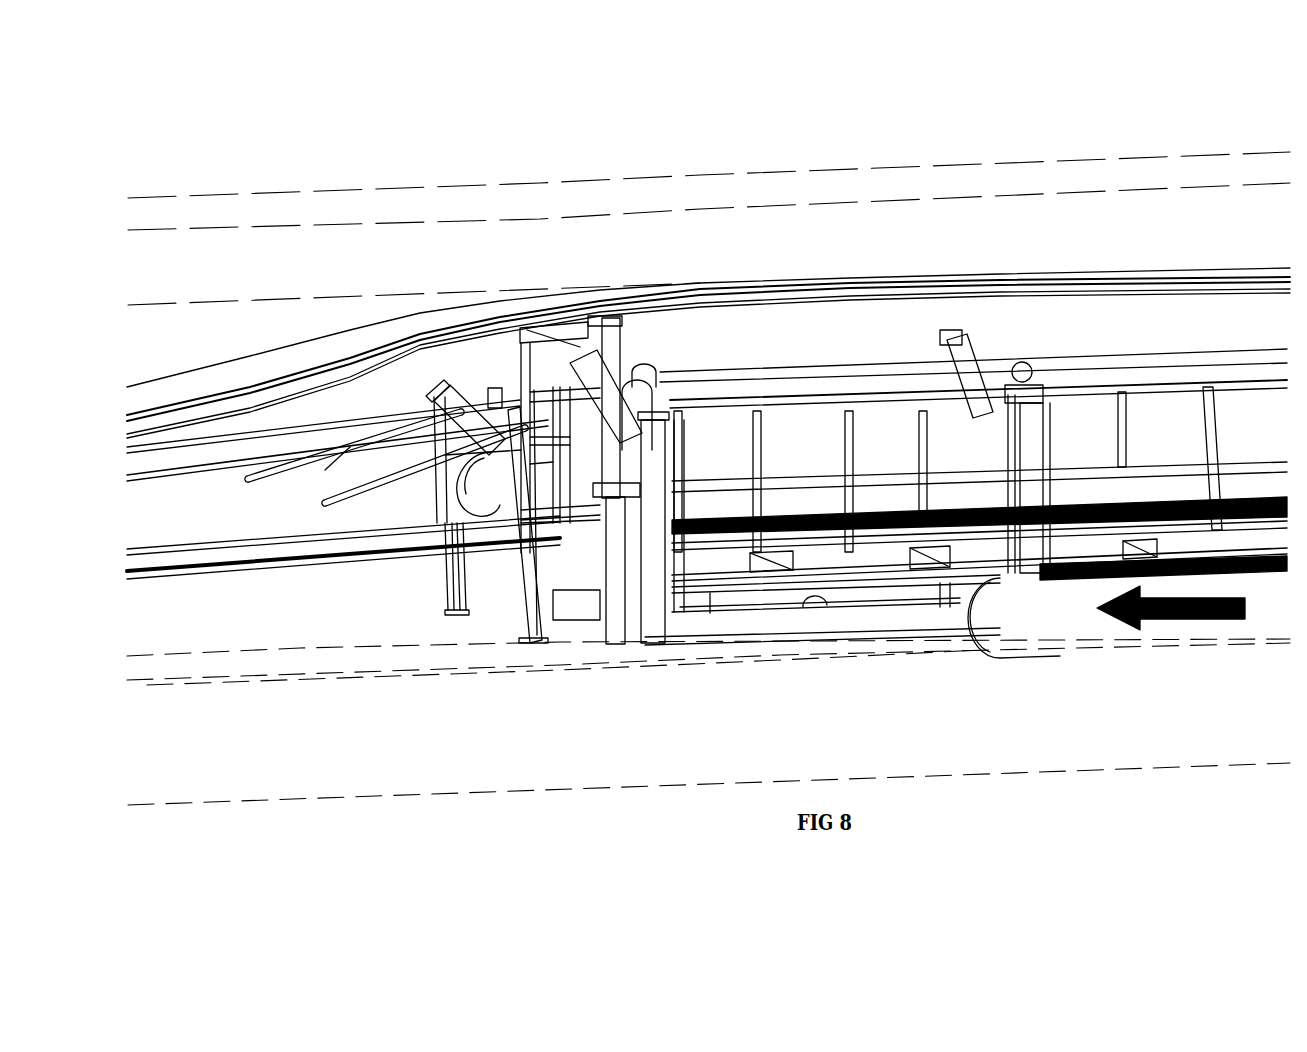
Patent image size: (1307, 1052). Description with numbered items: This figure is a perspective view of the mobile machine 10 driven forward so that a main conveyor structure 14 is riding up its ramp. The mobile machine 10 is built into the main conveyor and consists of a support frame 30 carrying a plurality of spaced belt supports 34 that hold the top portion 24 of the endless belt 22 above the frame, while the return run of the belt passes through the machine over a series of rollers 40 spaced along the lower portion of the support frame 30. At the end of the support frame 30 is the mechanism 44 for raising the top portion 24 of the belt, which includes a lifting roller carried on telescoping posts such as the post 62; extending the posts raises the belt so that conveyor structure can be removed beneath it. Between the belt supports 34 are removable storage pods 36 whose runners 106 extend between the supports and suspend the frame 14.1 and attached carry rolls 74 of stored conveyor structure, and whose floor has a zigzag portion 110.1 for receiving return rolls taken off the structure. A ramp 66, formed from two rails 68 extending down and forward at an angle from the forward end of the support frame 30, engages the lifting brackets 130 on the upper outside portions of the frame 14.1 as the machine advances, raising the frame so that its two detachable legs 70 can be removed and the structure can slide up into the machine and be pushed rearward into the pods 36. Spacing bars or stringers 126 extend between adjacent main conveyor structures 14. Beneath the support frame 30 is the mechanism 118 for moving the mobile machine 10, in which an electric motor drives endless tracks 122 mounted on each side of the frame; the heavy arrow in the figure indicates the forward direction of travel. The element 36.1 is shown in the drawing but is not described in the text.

The mobile machine 10 is at (863, 177).
The endless belt 22 is at (718, 277).
The top portion of the endless belt 24 is at (1163, 284).
The ramp 66 is at (343, 400).
The rails 68 is at (400, 463).
The spacing bars or stringers 126 is at (350, 447).
The lifting brackets 130 is at (510, 412).
The support frame 30 is at (791, 625).
The storage pods 36 is at (877, 557).
The frame brace 36.1 is at (887, 497).
The zigzag portion of floor 110.1 is at (728, 520).
The runners 106 is at (783, 372).
The belt supports 34 is at (663, 553).
The endless tracks 122 is at (987, 640).
The mechanism for moving the mobile machine 118 is at (1090, 610).
The mechanism for raising the top portion of the belt 44 is at (565, 338).
The post 62 is at (617, 617).
The main conveyor structure 14 is at (512, 642).
The frame 14.1 is at (455, 550).
The rollers 40 is at (543, 600).
The detachable legs 70 is at (528, 593).
The carry rolls 74 is at (473, 500).